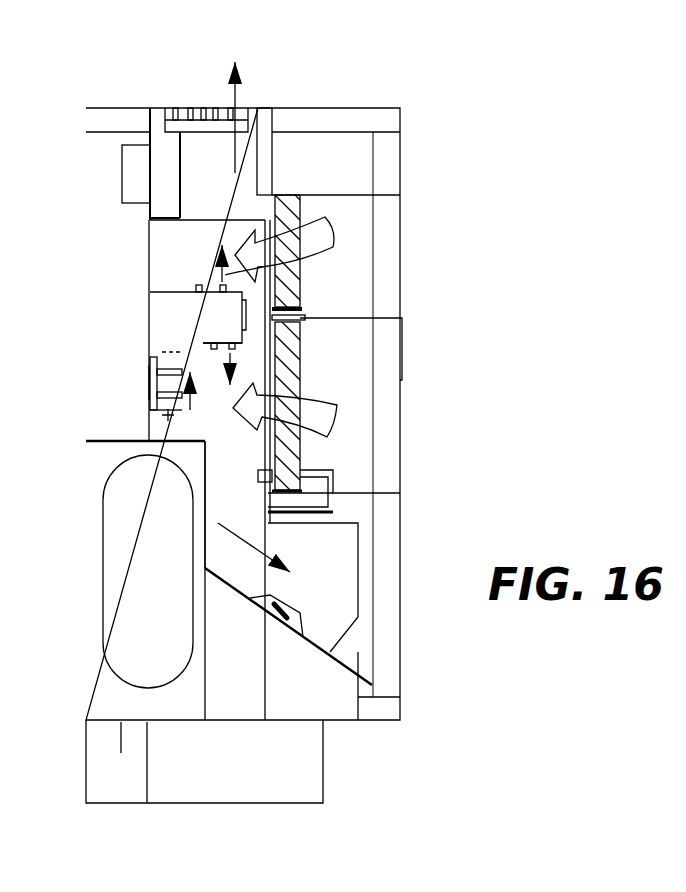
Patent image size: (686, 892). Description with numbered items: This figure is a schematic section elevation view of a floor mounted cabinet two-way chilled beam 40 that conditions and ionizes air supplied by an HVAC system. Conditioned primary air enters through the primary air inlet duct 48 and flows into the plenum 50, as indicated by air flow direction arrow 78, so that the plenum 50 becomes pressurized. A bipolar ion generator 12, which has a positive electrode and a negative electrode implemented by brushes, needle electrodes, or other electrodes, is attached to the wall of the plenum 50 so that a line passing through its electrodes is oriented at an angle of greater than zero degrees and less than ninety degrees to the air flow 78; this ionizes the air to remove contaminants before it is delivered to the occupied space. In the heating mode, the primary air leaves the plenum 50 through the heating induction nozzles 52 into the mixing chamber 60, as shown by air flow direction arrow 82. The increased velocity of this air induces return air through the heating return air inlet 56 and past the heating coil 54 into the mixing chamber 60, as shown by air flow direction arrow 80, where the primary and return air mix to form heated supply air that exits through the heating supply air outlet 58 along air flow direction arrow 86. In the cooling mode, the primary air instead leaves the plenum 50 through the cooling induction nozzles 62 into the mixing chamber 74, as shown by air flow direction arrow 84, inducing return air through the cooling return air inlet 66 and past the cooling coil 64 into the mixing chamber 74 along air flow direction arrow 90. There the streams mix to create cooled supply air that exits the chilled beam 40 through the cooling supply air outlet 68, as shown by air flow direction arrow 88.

The bipolar ion generator 12 is at (150, 382).
The cabinet two-way chilled beam 40 is at (470, 160).
The primary air inlet duct 48 is at (103, 620).
The plenum 50 is at (160, 343).
The heating induction nozzles 52 is at (197, 285).
The heating coil 54 is at (308, 217).
The heating return air inlet 56 is at (402, 212).
The heating supply air outlet 58 is at (202, 106).
The mixing chamber 60 is at (212, 253).
The cooling induction nozzles 62 is at (203, 343).
The cooling coil 64 is at (303, 447).
The cooling return air inlet 66 is at (400, 487).
The cooling supply air outlet 68 is at (357, 653).
The mixing chamber 74 is at (222, 466).
The air flow direction arrow 78 is at (170, 443).
The air flow direction arrow 80 is at (327, 257).
The air flow direction arrow 82 is at (304, 309).
The air flow direction arrow 84 is at (246, 343).
The air flow direction arrow 86 is at (238, 88).
The air flow direction arrow 88 is at (245, 547).
The air flow direction arrow 90 is at (332, 399).